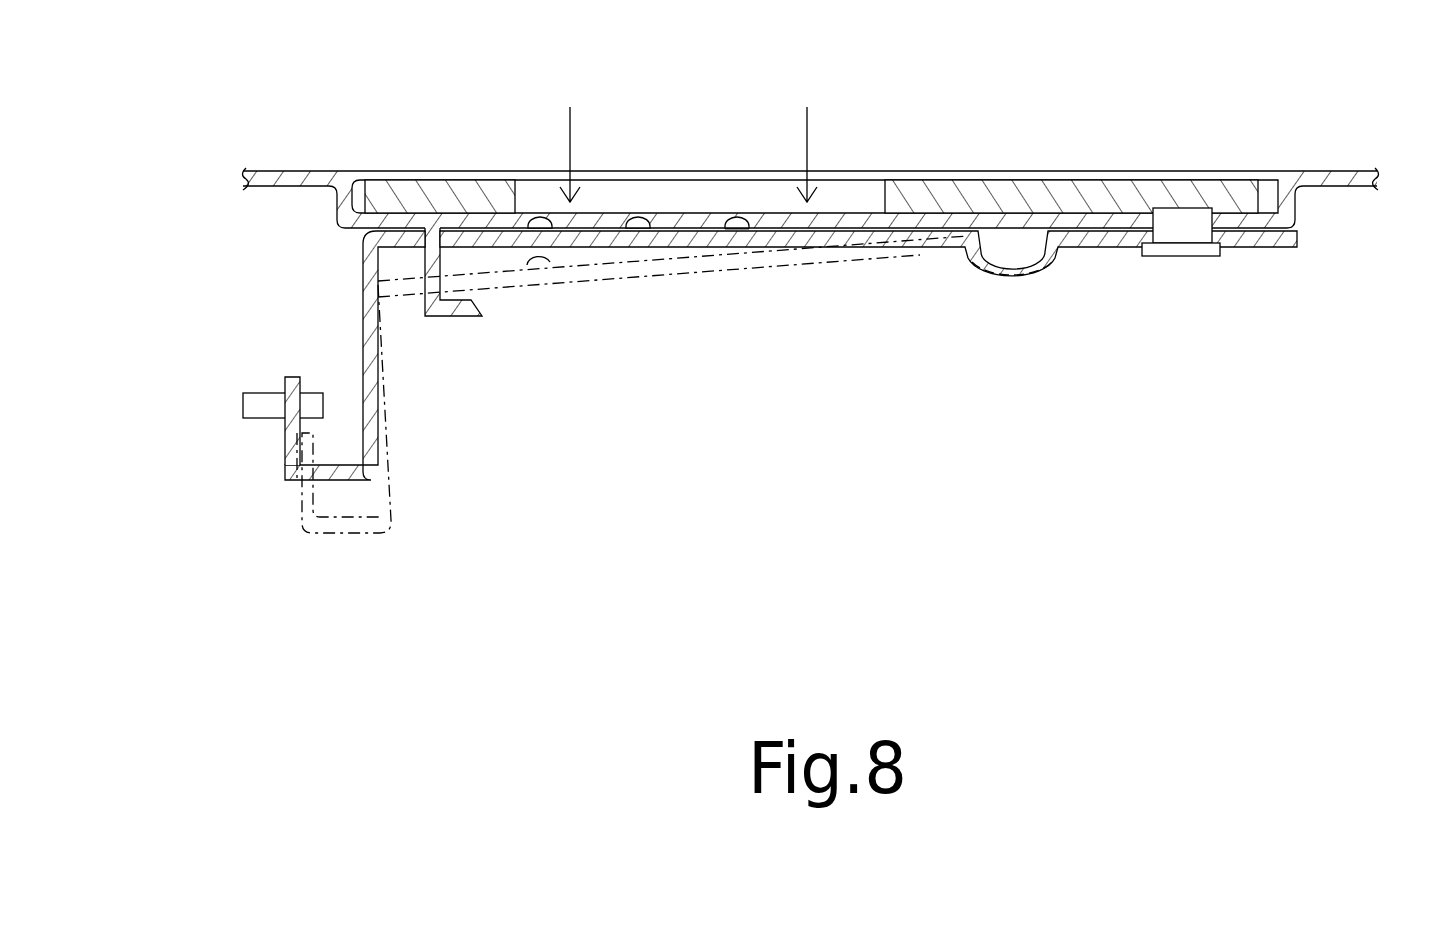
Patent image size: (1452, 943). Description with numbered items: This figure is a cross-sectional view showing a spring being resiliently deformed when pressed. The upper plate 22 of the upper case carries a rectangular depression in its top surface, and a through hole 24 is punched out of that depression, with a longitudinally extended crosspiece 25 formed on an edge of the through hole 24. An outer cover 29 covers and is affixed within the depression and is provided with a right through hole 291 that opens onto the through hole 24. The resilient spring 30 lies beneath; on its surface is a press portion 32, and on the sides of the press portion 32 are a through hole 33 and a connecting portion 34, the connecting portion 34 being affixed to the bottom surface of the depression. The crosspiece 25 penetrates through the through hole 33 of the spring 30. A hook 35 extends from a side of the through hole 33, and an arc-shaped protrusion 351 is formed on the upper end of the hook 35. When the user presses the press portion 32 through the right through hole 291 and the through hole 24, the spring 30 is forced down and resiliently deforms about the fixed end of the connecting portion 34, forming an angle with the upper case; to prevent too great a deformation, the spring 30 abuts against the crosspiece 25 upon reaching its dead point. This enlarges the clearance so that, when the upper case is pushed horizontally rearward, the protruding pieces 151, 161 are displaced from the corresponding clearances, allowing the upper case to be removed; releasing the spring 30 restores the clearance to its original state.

The upper plate 22 is at (1310, 178).
The through hole 24 is at (522, 190).
The crosspiece 25 is at (433, 304).
The outer cover 29 is at (978, 188).
The right through hole 291 is at (718, 192).
The resilient spring 30 is at (608, 238).
The press portion 32 is at (737, 215).
The through hole 33 is at (462, 240).
The connecting portion 34 is at (1232, 234).
The hook 35 is at (290, 470).
The arc-shaped protrusion 351 is at (292, 380).
The protruding piece 151 is at (196, 434).
The protruding piece 161 is at (262, 412).